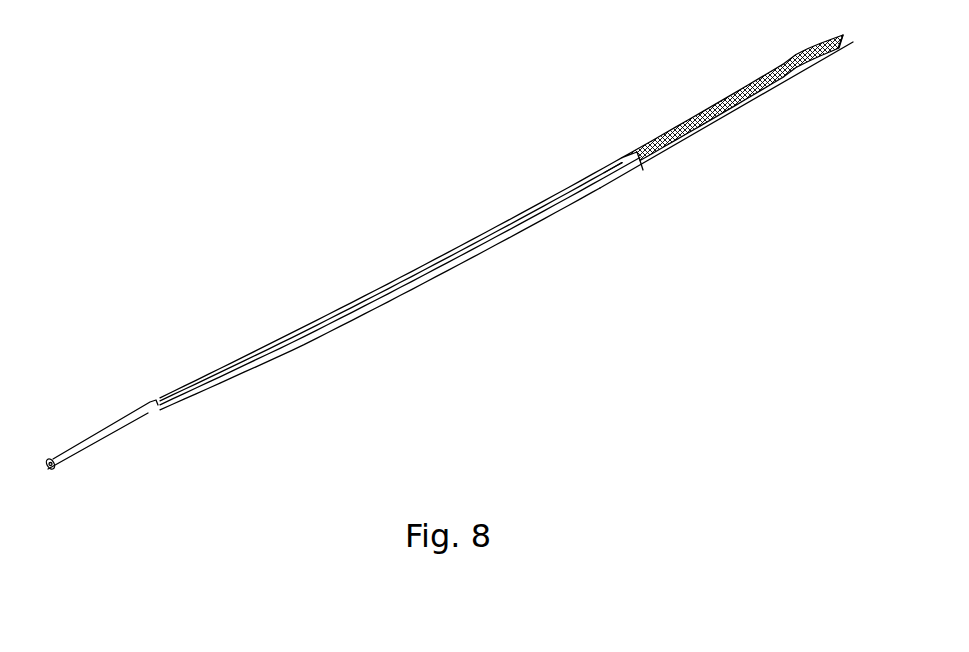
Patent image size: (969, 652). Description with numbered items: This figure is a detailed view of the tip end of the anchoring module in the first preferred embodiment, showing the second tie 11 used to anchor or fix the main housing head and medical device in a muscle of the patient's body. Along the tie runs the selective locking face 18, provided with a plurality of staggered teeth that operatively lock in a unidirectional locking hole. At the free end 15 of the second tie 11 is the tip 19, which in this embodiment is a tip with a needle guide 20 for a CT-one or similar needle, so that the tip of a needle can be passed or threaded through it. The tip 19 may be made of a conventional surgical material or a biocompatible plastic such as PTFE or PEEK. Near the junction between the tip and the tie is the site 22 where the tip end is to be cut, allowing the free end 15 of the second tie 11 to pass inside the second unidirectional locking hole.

The second tie 11 is at (725, 153).
The free end 15 is at (308, 305).
The selective locking face 18 is at (717, 108).
The tip 19 is at (93, 417).
The needle guide 20 is at (110, 438).
The cutting site 22 is at (597, 172).